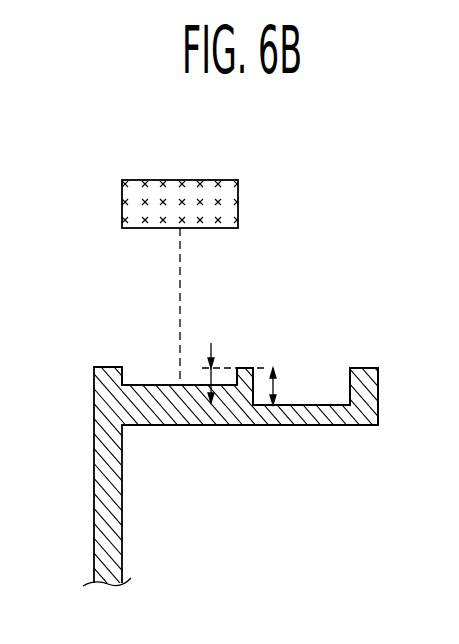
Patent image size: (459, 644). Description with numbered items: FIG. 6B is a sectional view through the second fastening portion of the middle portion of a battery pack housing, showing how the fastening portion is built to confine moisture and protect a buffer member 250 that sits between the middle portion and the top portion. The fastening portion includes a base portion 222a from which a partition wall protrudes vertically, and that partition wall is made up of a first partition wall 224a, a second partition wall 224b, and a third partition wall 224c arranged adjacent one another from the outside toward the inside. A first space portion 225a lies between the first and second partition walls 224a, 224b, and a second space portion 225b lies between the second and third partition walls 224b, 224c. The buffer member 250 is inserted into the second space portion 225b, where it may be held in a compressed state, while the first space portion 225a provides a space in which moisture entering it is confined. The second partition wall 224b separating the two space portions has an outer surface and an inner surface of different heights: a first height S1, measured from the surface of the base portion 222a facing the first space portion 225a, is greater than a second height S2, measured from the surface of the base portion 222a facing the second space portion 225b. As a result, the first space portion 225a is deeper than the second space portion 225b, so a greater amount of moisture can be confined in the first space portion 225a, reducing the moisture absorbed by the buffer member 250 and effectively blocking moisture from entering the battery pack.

The buffer member 250 is at (122, 202).
The second space portion 225b is at (152, 366).
The first space portion 225a is at (316, 387).
The third partition wall 224c is at (113, 374).
The second partition wall 224b is at (227, 388).
The first partition wall 224a is at (352, 376).
The base portion 222a is at (318, 422).
The first height S1 is at (275, 383).
The second height S2 is at (210, 373).